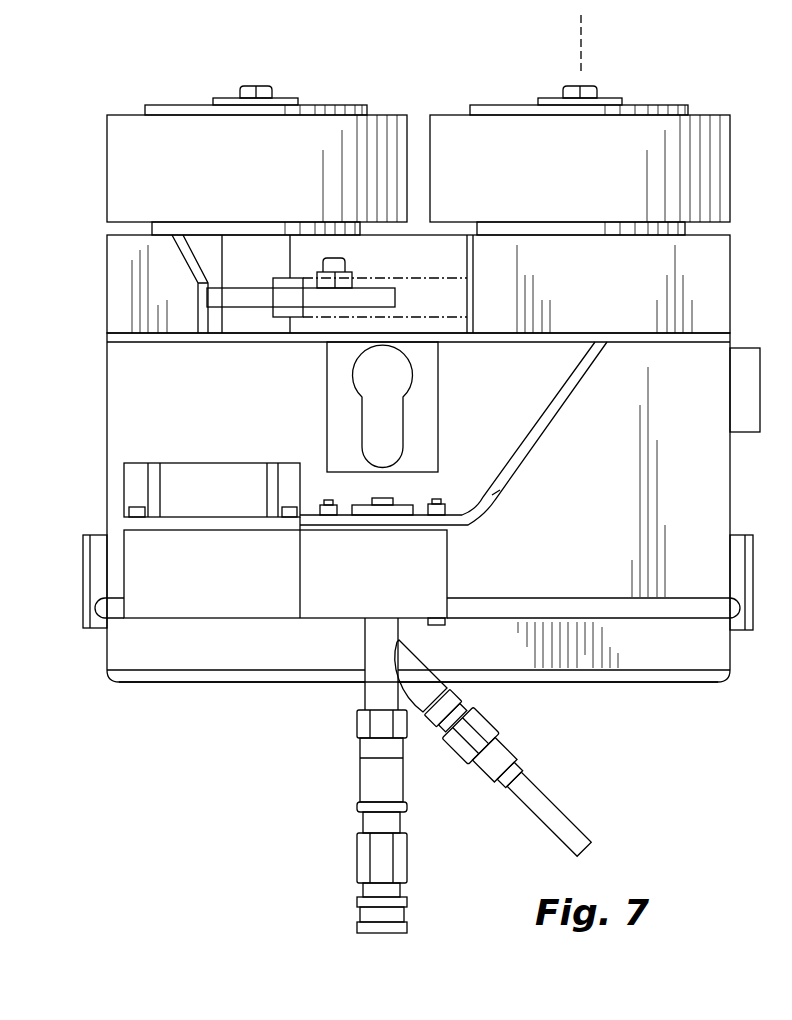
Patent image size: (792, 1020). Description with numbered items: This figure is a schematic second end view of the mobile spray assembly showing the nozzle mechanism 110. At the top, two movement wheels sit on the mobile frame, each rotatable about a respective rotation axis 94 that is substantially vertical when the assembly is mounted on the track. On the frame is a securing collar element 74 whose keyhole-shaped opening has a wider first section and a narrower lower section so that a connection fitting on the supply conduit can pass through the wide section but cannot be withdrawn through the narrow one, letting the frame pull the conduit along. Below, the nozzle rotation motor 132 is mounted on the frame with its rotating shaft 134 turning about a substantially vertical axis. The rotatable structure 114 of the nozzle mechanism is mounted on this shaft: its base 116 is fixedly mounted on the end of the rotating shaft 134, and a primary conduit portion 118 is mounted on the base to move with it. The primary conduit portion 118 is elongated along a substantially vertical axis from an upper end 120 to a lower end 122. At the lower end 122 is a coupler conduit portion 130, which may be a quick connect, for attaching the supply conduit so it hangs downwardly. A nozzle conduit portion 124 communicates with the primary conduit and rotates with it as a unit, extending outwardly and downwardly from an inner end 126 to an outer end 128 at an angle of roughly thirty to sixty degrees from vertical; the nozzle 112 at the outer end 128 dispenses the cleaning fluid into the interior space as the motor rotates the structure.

The rotation axis 94 is at (581, 52).
The securing collar element 74 is at (332, 385).
The nozzle rotation motor 132 is at (327, 572).
The rotating shaft 134 is at (397, 612).
The base 116 is at (372, 632).
The upper end 120 is at (372, 652).
The rotatable structure 114 is at (372, 690).
The nozzle mechanism 110 is at (308, 821).
The primary conduit portion 118 is at (372, 780).
The lower end 122 is at (368, 818).
The coupler conduit portion 130 is at (363, 908).
The inner end 126 is at (408, 662).
The nozzle conduit portion 124 is at (480, 722).
The outer end 128 is at (573, 848).
The nozzle 112 is at (540, 756).